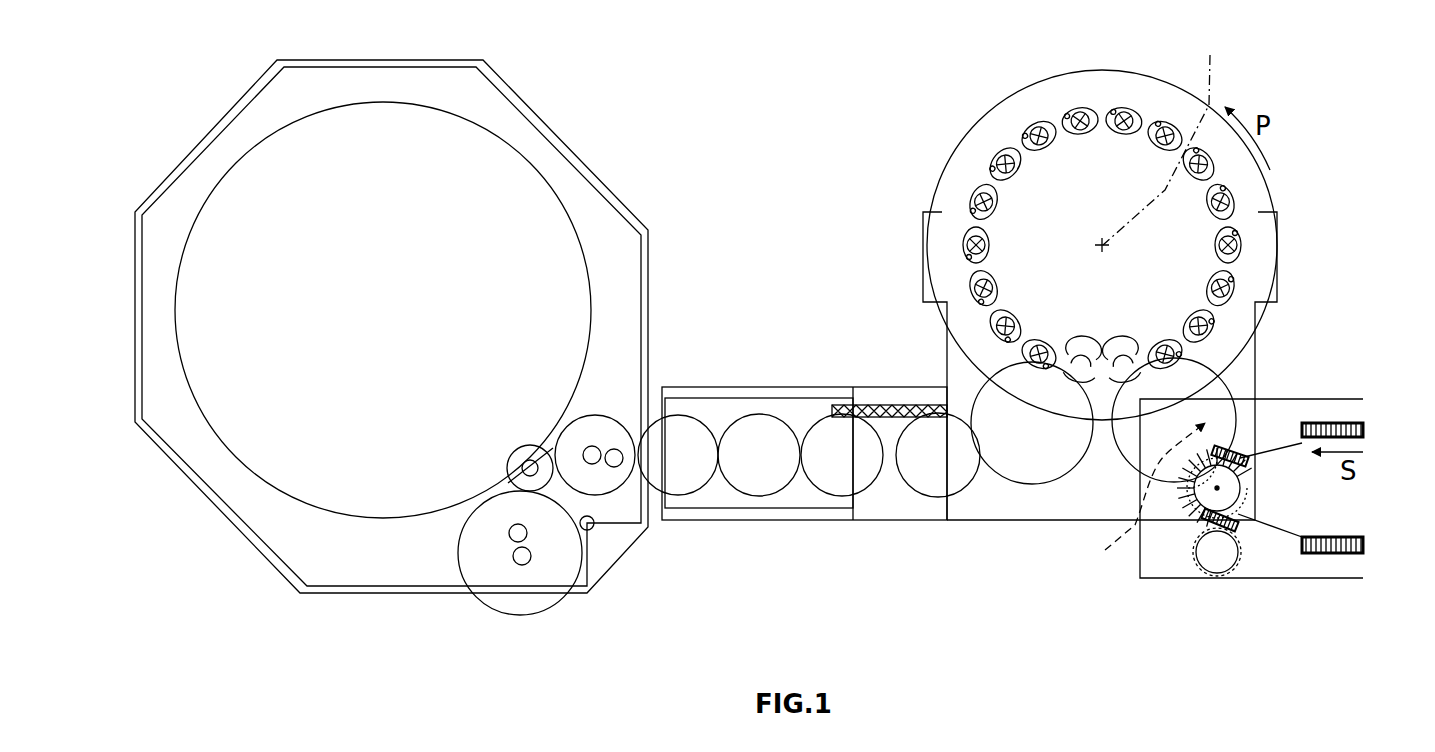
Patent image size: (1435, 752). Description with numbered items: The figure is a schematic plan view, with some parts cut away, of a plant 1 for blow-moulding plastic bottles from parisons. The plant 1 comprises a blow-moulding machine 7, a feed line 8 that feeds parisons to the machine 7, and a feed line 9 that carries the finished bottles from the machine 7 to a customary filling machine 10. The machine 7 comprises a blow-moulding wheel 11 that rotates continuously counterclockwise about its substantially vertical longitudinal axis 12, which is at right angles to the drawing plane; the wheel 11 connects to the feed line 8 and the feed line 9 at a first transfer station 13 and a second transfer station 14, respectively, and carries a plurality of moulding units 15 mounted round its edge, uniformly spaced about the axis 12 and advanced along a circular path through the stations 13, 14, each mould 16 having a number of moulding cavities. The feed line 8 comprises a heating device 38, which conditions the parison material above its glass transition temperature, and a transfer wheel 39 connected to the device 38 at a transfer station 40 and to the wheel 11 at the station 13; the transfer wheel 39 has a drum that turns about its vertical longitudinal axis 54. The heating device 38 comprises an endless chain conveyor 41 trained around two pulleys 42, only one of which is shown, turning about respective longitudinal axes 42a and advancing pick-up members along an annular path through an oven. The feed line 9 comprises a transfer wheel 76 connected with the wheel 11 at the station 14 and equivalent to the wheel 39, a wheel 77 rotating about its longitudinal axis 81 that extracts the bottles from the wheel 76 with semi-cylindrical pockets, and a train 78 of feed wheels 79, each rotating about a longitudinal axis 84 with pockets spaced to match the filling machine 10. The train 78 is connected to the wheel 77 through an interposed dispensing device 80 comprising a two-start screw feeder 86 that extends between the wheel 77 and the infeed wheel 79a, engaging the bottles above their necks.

The plant 1 is at (1273, 75).
The blow-moulding machine 7 is at (1072, 100).
The feed line 8 is at (1243, 598).
The feed line 9 is at (685, 548).
The filling machine 10 is at (508, 217).
The blow-moulding wheel 11 is at (1115, 155).
The longitudinal axis 12 is at (1166, 136).
The first transfer station 13 is at (1218, 342).
The second transfer station 14 is at (978, 355).
The moulding units 15 is at (1025, 118).
The mould 16 is at (963, 237).
The heating device 38 is at (1345, 566).
The transfer wheel 39 is at (1243, 437).
The transfer station 40 is at (1250, 452).
The endless chain conveyor 41 is at (1290, 535).
The pulleys 42 is at (1219, 488).
The longitudinal axes 42a is at (1222, 495).
The longitudinal axis 54 is at (1140, 500).
The transfer wheel 76 is at (1035, 470).
The wheel 77 is at (917, 462).
The train 78 is at (715, 396).
The feed wheels 79 is at (592, 420).
The infeed wheel 79a is at (830, 463).
The dispensing device 80 is at (842, 388).
The longitudinal axis 81 is at (937, 450).
The longitudinal axis 84 is at (673, 453).
The screw feeder 86 is at (888, 406).